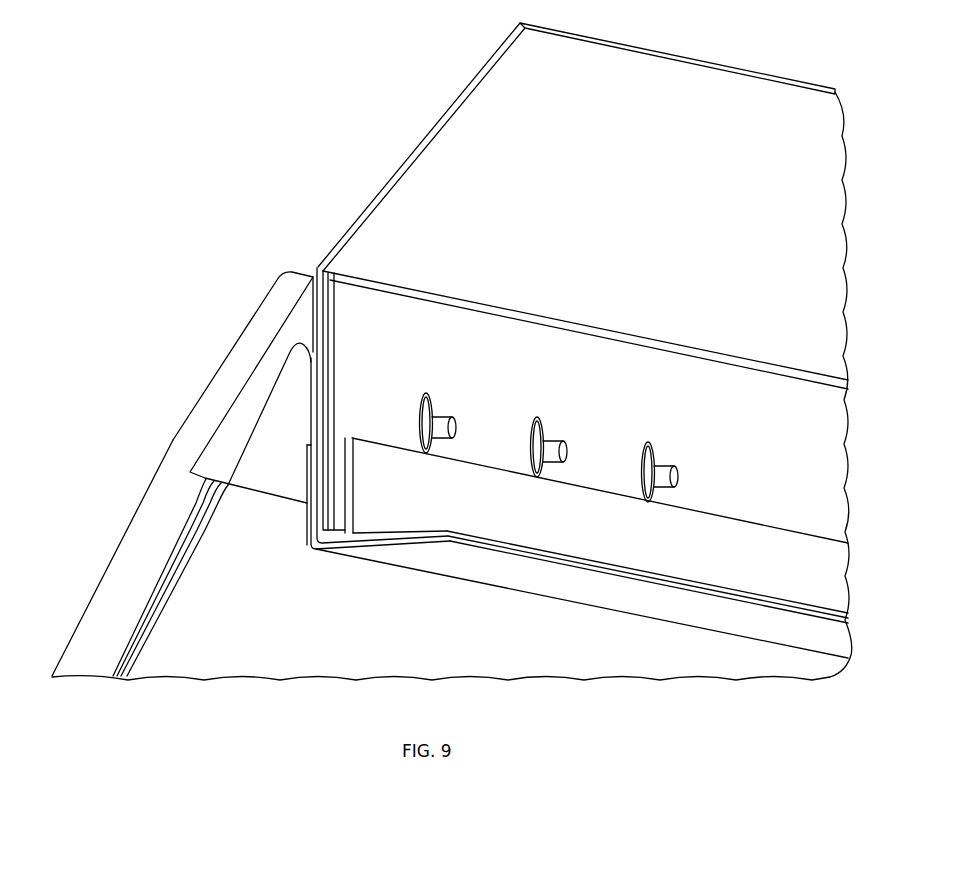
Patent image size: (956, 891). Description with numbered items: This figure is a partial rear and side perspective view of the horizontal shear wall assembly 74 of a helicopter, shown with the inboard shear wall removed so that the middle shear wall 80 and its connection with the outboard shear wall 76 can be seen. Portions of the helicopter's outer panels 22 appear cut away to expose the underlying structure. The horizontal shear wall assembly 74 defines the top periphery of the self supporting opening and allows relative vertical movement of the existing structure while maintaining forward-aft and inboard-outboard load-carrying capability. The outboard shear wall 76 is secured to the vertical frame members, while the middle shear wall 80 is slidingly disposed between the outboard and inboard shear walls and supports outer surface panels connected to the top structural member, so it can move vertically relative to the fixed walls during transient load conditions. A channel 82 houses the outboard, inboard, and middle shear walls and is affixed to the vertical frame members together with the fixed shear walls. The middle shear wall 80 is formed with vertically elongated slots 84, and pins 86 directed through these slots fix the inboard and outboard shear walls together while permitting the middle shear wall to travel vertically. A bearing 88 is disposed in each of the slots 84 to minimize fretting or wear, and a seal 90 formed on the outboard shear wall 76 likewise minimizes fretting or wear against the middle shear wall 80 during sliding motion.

The outer panels 22 is at (142, 578).
The horizontal shear wall assembly 74 is at (305, 84).
The outboard shear wall 76 is at (277, 443).
The middle shear wall 80 is at (654, 194).
The channel 82 is at (337, 561).
The vertically elongated slots 84 is at (573, 418).
The pins 86 is at (456, 424).
The bearing 88 is at (432, 411).
The seal 90 is at (324, 402).